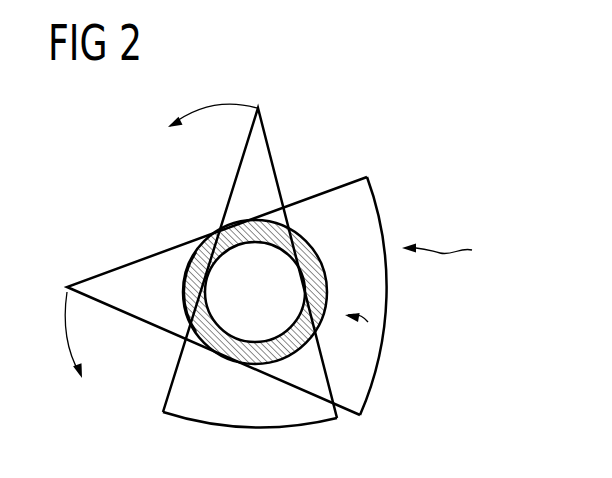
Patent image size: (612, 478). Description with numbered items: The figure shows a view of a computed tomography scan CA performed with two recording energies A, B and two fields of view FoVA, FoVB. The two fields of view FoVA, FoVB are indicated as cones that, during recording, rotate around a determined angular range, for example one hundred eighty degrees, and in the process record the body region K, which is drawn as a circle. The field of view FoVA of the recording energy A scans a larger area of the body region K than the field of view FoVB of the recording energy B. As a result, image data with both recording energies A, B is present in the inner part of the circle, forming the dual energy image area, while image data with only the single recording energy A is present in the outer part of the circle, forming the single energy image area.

The recording energy A is at (63, 325).
The recording energy B is at (217, 100).
The field of view of recording energy A FoVA is at (372, 192).
The field of view of recording energy B FoVB is at (263, 138).
The computed tomography scan CA is at (456, 249).
The body region K is at (384, 335).